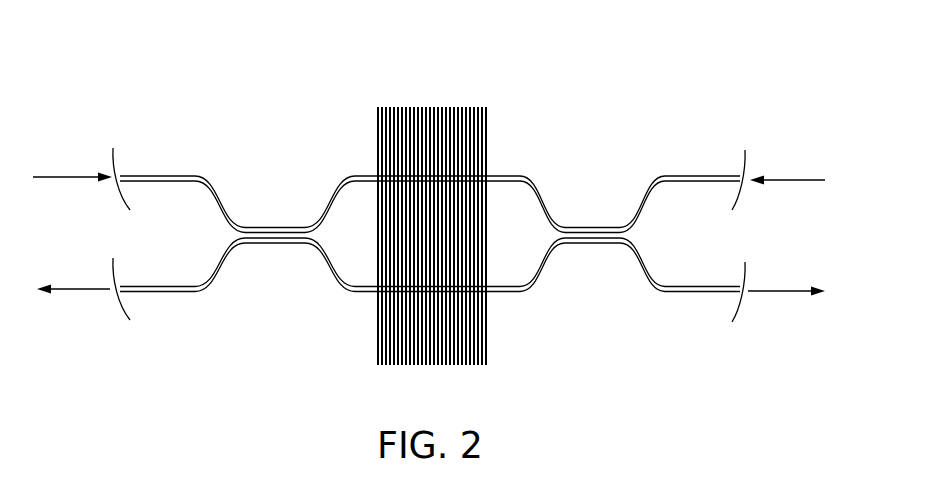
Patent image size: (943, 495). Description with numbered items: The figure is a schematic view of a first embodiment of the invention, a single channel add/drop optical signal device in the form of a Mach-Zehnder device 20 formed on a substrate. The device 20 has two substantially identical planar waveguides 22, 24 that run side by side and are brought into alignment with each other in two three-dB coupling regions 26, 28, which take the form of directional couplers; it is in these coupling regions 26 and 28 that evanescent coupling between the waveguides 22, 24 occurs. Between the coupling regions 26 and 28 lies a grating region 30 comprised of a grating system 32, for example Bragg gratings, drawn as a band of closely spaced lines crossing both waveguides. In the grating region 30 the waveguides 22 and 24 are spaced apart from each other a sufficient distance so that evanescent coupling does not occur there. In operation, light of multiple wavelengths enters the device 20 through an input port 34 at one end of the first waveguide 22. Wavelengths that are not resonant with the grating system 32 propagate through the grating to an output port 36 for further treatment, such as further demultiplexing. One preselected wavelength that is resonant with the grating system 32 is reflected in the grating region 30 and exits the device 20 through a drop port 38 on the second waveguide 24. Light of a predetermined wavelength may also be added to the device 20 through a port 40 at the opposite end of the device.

The Mach-Zehnder device 20 is at (609, 112).
The planar waveguide 22 is at (220, 190).
The planar waveguide 24 is at (236, 256).
The 3-dB coupling region 26 is at (283, 209).
The 3-dB coupling region 28 is at (593, 210).
The grating region 30 is at (526, 147).
The grating system 32 is at (423, 107).
The input port 34 is at (120, 178).
The output port 36 is at (738, 288).
The drop port 38 is at (120, 289).
The port 40 is at (740, 177).